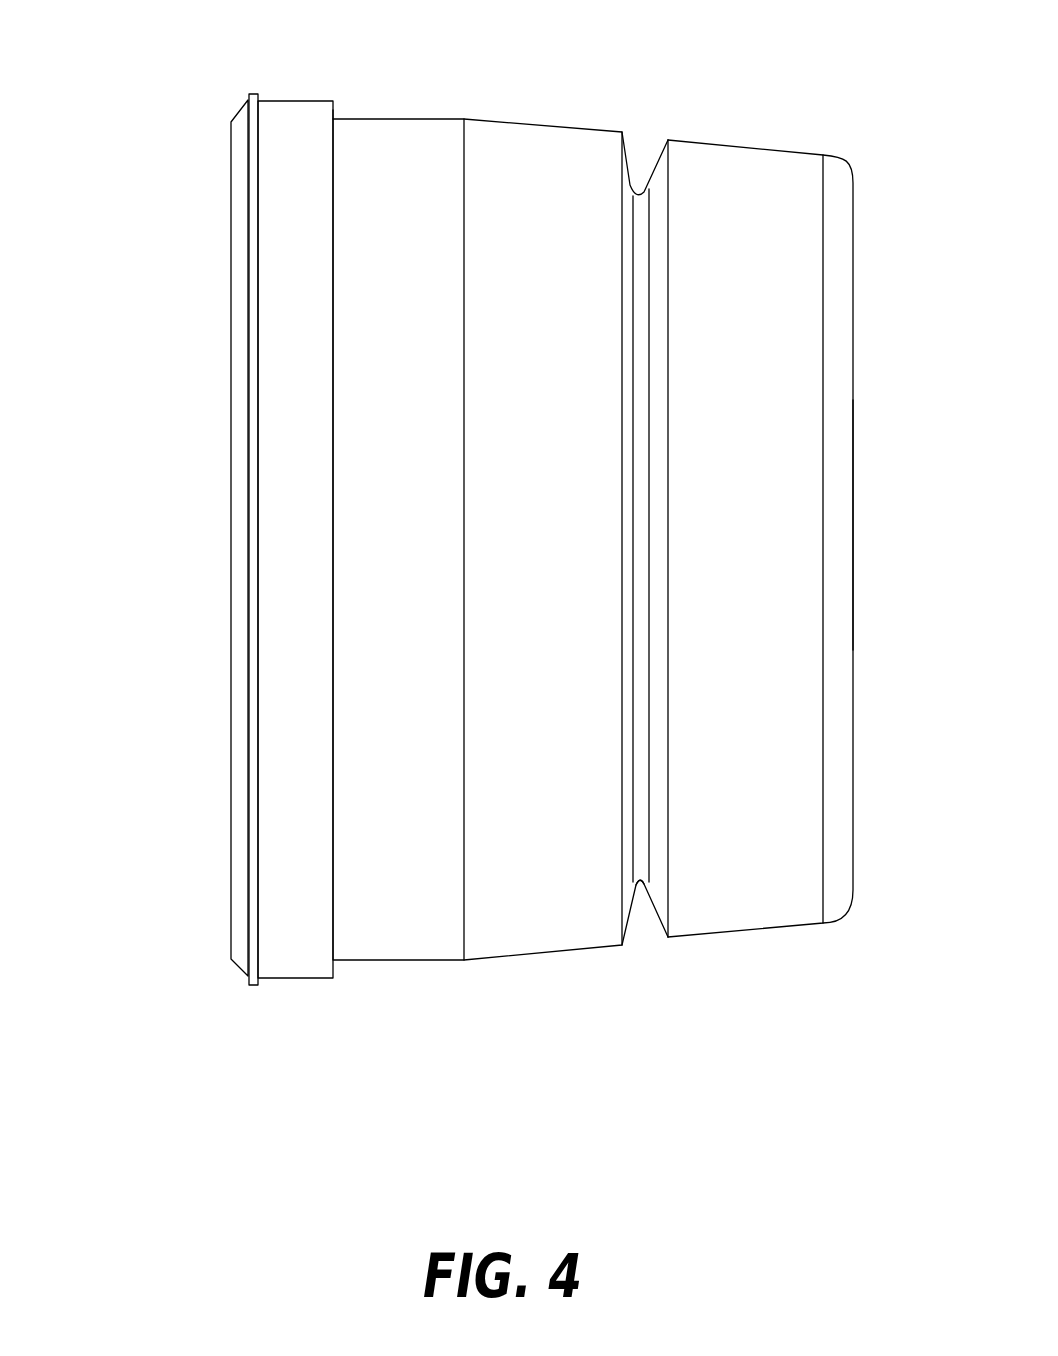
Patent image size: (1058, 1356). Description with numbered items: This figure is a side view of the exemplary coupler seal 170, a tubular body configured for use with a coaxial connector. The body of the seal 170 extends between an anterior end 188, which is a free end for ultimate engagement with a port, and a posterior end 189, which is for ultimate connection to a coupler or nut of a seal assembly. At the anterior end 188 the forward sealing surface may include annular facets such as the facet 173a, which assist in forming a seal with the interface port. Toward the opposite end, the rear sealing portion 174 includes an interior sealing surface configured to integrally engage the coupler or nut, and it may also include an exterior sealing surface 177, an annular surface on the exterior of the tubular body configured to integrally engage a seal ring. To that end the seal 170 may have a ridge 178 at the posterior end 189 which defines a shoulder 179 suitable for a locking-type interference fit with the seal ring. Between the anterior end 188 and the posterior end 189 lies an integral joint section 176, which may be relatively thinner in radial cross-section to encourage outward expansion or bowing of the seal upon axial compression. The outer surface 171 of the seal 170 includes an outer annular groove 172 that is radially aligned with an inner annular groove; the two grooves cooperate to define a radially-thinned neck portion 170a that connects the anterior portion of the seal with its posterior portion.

The coupler seal 170 is at (148, 148).
The radially-thinned neck portion 170a is at (640, 884).
The outer surface 171 is at (753, 145).
The outer annular groove 172 is at (628, 157).
The annular facet 173a is at (855, 517).
The rear sealing portion 174 is at (222, 302).
The integral joint section 176 is at (462, 978).
The exterior sealing surface 177 is at (277, 980).
The ridge 178 is at (325, 100).
The shoulder 179 is at (333, 110).
The anterior end 188 is at (868, 303).
The posterior end 189 is at (147, 502).